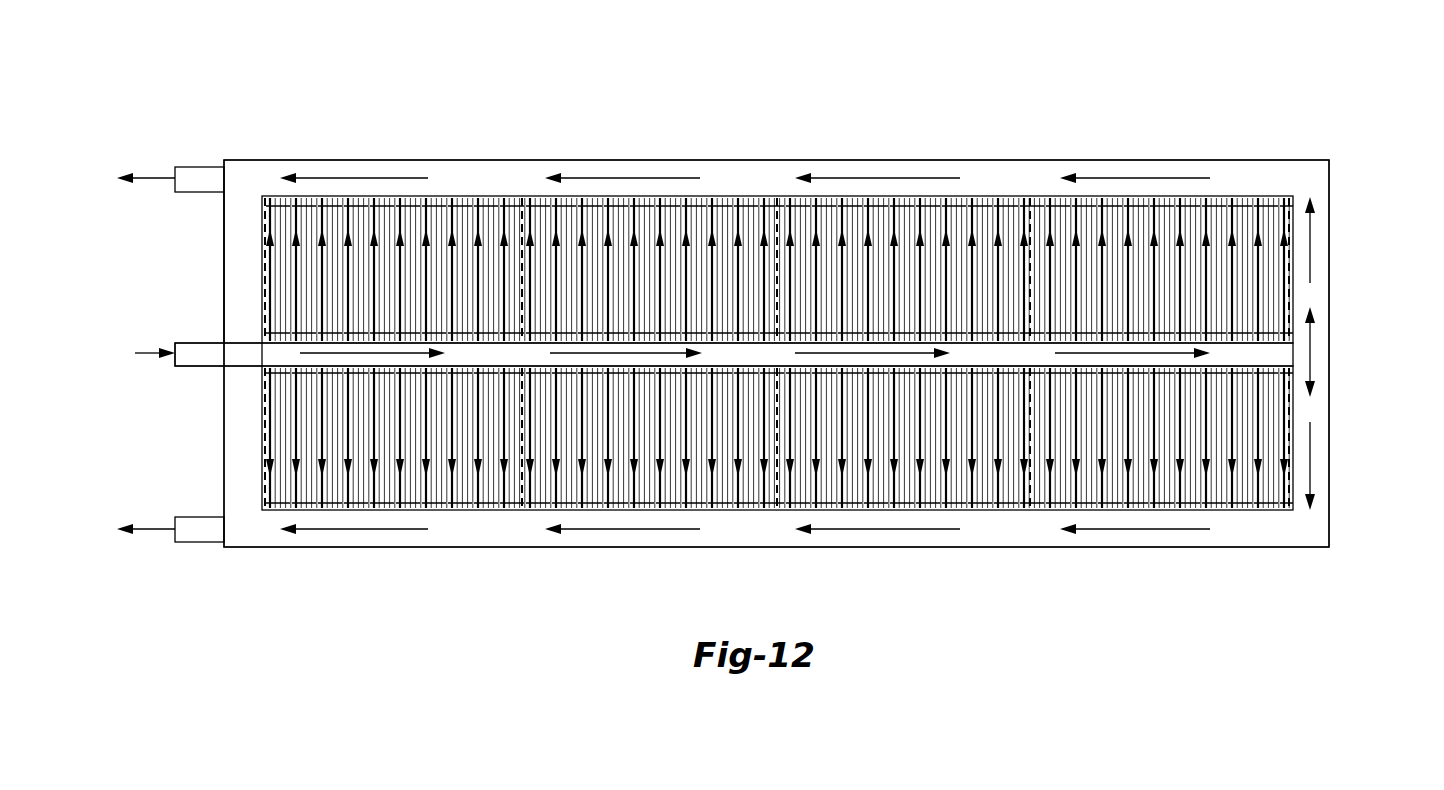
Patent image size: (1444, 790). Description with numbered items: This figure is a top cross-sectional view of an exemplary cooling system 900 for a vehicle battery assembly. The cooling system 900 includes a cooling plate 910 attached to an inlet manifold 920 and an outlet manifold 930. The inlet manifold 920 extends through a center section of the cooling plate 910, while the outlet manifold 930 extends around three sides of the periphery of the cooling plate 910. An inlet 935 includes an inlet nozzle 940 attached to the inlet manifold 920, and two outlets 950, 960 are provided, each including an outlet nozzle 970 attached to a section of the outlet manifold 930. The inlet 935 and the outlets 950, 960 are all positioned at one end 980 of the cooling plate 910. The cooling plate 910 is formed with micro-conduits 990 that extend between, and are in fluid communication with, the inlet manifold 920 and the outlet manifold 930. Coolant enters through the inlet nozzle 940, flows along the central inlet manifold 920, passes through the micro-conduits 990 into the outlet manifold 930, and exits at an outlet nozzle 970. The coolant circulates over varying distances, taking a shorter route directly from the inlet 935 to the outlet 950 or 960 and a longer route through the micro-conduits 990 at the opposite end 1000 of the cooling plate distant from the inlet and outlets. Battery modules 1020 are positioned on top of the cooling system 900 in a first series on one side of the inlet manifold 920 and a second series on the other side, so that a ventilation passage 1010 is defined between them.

The end 1000 is at (1326, 112).
The cooling system 900 is at (1380, 146).
The cooling plate 910 is at (240, 450).
The inlet manifold 920 is at (462, 352).
The outlet manifold 930 is at (1125, 170).
The inlet 935 is at (205, 380).
The inlet nozzle 940 is at (193, 350).
The outlet 950 is at (203, 566).
The outlet 960 is at (201, 134).
The outlet nozzle 970 is at (200, 180).
The end 980 is at (136, 264).
The micro-conduits 990 is at (880, 197).
The ventilation passage 1010 is at (755, 353).
The battery modules 1020 is at (1272, 510).